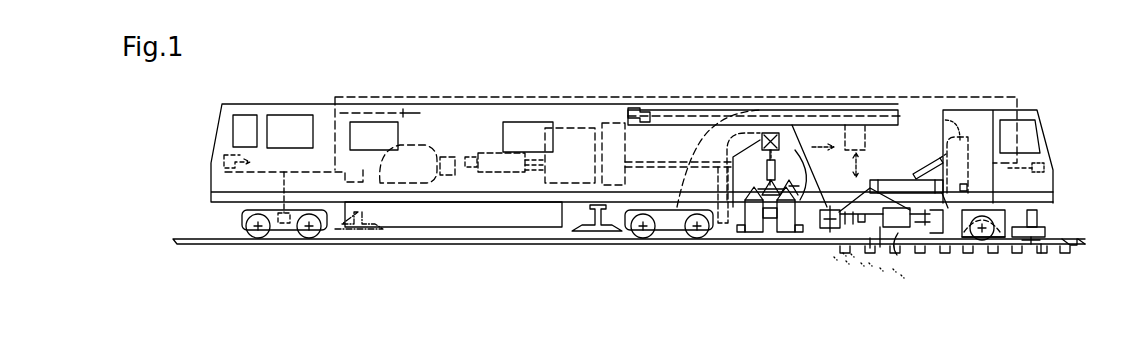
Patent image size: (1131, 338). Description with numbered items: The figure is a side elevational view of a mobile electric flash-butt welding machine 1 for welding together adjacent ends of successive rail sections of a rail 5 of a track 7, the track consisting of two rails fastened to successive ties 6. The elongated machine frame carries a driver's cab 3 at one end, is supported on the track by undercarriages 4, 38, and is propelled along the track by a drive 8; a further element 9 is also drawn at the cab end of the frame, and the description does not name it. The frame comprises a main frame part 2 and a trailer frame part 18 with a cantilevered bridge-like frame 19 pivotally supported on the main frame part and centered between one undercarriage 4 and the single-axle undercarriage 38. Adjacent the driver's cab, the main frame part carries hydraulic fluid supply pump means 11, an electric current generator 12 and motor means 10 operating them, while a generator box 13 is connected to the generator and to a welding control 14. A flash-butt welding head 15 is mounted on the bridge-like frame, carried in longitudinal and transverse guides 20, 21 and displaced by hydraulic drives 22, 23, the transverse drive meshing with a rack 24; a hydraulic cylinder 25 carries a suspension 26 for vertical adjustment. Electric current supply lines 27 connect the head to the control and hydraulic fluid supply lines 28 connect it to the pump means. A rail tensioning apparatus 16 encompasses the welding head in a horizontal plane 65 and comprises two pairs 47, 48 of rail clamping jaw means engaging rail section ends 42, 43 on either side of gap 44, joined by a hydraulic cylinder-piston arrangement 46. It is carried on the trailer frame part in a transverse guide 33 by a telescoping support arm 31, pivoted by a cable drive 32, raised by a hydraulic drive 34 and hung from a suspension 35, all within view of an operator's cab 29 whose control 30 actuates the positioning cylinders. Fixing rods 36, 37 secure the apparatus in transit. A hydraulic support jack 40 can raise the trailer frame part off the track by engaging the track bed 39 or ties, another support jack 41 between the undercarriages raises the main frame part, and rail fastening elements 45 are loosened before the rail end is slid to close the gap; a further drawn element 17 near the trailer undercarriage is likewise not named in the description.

The mobile electric flash-butt welding machine 1 is at (688, 90).
The main frame part 2 is at (480, 204).
The driver's cab 3 is at (225, 130).
The undercarriage 4 is at (242, 215).
The rail 5 is at (195, 243).
The ties 6 is at (1067, 254).
The track 7 is at (1076, 242).
The drive 8 is at (283, 226).
The operator cab 9 is at (226, 159).
The motor means 10 is at (410, 176).
The hydraulic fluid supply pump means 11 is at (355, 172).
The electric current generator 12 is at (490, 158).
The generator box 13 is at (568, 140).
The welding control 14 is at (612, 142).
The flash-butt welding head 15 is at (755, 226).
The rail tensioning apparatus 16 is at (842, 228).
The lining rollers 17 is at (990, 238).
The trailer frame part 18 is at (975, 122).
The bridge-like frame 19 is at (925, 170).
The longitudinal guide 20 is at (825, 112).
The transverse guide 21 is at (767, 133).
The hydraulic drive 22 is at (648, 108).
The transverse hydraulic drive 23 is at (773, 133).
The rack 24 is at (766, 138).
The hydraulic cylinder 25 is at (776, 166).
The suspension 26 is at (794, 186).
The electric current supply lines 27 is at (645, 167).
The hydraulic fluid supply lines 28 is at (808, 210).
The operator's cab 29 is at (1035, 135).
The control 30 is at (1045, 165).
The support arm 31 is at (877, 180).
The cable drive 32 is at (968, 187).
The transverse guide 33 is at (946, 193).
The hydraulic drive 34 is at (945, 165).
The suspension 35 is at (850, 205).
The fixing rod 36 is at (823, 207).
The fixing rod 37 is at (940, 212).
The undercarriage 38 is at (983, 242).
The track bed 39 is at (1052, 255).
The hydraulic support jack 40 is at (1042, 230).
The support jack 41 is at (356, 230).
The rail section end 42 is at (858, 248).
The rail section end 43 is at (881, 250).
The gap 44 is at (870, 252).
The rail fastening elements 45 is at (1027, 246).
The hydraulic cylinder-piston arrangement 46 is at (900, 235).
The pair of rail clamping jaw means 47 is at (825, 230).
The pair of rail clamping jaw means 48 is at (910, 228).
The horizontal plane 65 is at (1065, 240).